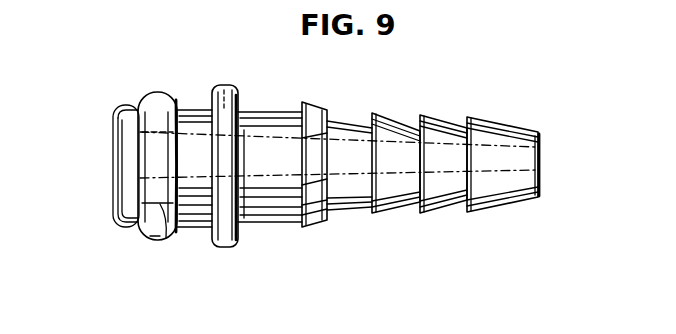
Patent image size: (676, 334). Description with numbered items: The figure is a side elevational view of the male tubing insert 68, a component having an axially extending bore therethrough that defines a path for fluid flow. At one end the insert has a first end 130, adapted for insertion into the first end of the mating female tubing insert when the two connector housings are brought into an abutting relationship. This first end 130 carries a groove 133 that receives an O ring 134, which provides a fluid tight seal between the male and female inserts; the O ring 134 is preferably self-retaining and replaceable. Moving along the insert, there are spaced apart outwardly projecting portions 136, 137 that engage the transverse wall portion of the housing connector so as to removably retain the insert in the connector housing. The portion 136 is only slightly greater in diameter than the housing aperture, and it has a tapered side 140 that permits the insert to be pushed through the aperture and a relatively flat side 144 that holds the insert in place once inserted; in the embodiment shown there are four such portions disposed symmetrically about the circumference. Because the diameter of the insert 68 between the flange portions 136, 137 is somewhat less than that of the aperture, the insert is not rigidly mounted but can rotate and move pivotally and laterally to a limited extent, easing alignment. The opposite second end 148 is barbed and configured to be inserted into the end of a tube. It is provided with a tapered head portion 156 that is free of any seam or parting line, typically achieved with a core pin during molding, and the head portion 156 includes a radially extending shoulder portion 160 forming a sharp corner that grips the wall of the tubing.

The male tubing insert 68 is at (104, 104).
The first end 130 is at (188, 138).
The groove 133 is at (165, 239).
The O ring 134 is at (175, 238).
The outwardly projecting portion 136 is at (313, 162).
The outwardly projecting portion 137 is at (223, 100).
The tapered side 140 is at (324, 224).
The flat side 144 is at (303, 227).
The second end 148 is at (484, 152).
The tapered head portion 156 is at (523, 200).
The shoulder portion 160 is at (463, 206).